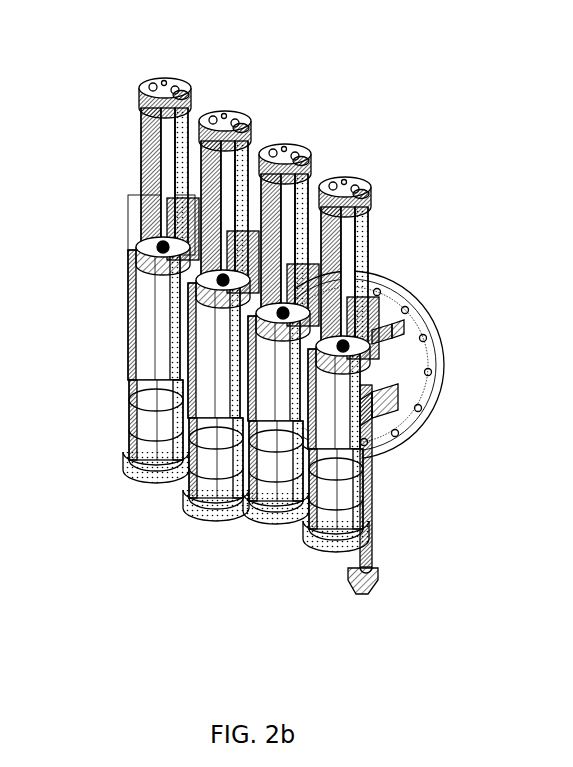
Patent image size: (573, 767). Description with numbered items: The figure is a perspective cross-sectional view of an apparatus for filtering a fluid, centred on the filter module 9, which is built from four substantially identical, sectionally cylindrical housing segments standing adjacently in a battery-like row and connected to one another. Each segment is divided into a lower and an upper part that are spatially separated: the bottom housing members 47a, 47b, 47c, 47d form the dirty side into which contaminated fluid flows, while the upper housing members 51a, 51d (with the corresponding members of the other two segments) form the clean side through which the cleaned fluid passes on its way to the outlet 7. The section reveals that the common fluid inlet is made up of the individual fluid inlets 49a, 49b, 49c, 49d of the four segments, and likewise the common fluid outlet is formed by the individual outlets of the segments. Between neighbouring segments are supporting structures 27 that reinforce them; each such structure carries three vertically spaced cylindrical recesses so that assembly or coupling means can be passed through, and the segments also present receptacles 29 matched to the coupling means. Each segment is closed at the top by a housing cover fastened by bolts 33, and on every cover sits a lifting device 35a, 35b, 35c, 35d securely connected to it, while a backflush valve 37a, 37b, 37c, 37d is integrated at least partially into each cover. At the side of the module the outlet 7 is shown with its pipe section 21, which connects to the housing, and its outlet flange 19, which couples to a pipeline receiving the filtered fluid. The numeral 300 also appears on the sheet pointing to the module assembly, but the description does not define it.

The outlet 7 is at (438, 328).
The filter module 9 is at (468, 167).
The outlet flange 19 is at (382, 340).
The pipe section 21 is at (398, 352).
The supporting structures 27 is at (150, 428).
The receptacles 29 is at (380, 474).
The bolts 33 is at (380, 512).
The actuator module 300 is at (130, 200).
The lifting device 35a is at (341, 175).
The lifting device 35b is at (278, 143).
The lifting device 35c is at (222, 115).
The lifting device 35d is at (162, 78).
The backflush valve 37a is at (367, 300).
The backflush valve 37b is at (303, 258).
The backflush valve 37c is at (247, 228).
The backflush valve 37d is at (188, 195).
The bottom housing member 47a is at (325, 495).
The bottom housing member 47b is at (212, 465).
The bottom housing member 47c is at (268, 497).
The bottom housing member 47d is at (142, 438).
The fluid inlet 49a is at (345, 500).
The fluid inlet 49b is at (215, 462).
The fluid inlet 49c is at (280, 490).
The fluid inlet 49d is at (165, 425).
The upper housing member 51a is at (387, 418).
The upper housing member 51d is at (128, 320).